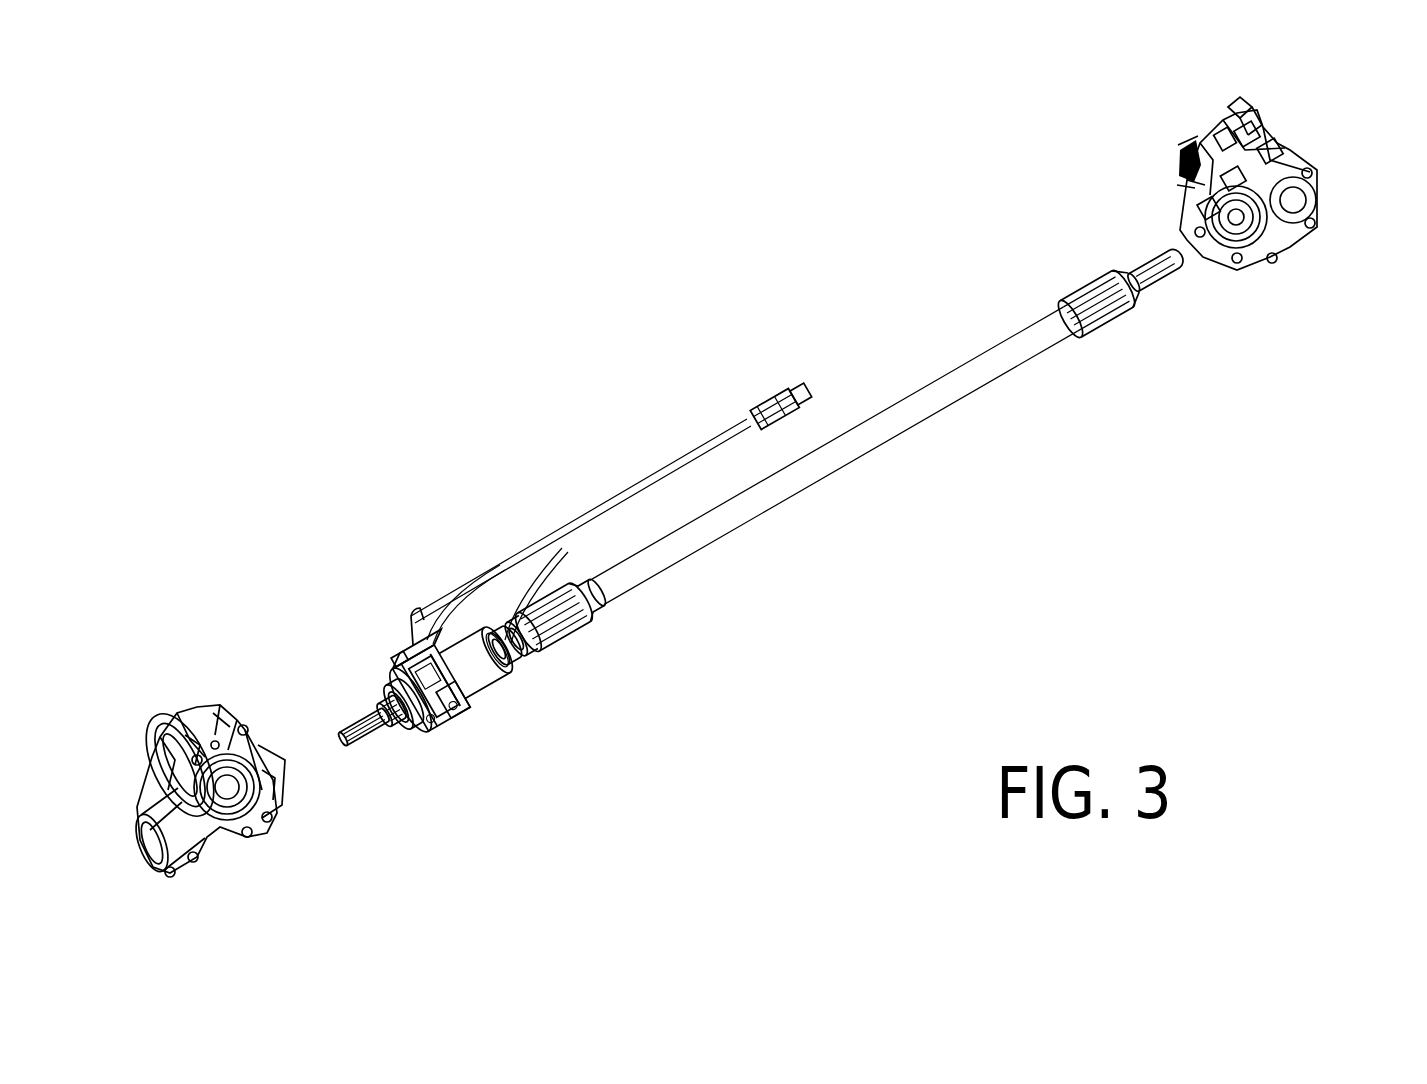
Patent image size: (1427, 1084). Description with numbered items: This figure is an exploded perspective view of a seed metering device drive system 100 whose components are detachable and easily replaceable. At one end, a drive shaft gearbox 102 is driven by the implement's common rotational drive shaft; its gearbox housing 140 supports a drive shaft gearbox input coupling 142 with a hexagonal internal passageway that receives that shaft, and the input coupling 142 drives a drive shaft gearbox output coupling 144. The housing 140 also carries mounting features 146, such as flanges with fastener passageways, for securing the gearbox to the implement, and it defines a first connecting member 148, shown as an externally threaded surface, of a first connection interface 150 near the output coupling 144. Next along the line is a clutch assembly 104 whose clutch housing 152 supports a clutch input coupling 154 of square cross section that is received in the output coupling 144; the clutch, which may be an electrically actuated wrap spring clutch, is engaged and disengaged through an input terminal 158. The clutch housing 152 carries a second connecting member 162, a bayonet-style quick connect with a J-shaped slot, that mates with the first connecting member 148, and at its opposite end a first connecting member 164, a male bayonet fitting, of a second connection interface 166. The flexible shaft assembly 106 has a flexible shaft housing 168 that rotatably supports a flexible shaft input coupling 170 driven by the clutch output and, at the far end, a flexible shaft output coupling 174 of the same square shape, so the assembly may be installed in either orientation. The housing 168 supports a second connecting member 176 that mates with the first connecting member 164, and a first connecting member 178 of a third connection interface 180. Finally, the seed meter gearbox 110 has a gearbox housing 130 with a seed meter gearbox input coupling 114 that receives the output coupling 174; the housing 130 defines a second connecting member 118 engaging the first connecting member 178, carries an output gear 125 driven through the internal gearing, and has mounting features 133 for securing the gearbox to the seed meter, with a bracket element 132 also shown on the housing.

The seed metering device drive system 100 is at (558, 215).
The drive shaft gearbox 102 is at (297, 897).
The clutch assembly 104 is at (381, 560).
The flexible shaft assembly 106 is at (882, 488).
The seed meter gearbox 110 is at (1328, 267).
The seed meter gearbox input coupling 114 is at (1207, 230).
The second connecting member 118 is at (1233, 233).
The output gear 125 is at (1180, 153).
The gearbox housing 130 is at (1300, 193).
The mounting bracket 132 is at (1257, 127).
The mounting features 133 is at (1263, 158).
The gearbox housing 140 is at (181, 845).
The drive shaft gearbox input coupling 142 is at (248, 820).
The drive shaft gearbox output coupling 144 is at (288, 777).
The mounting features 146 is at (148, 803).
The first connecting member 148 is at (275, 788).
The first connection interface 150 is at (378, 817).
The clutch housing 152 is at (463, 687).
The clutch input coupling 154 is at (350, 727).
The input terminal 158 is at (417, 650).
The second connecting member 162 is at (385, 700).
The first connecting member 164 is at (500, 660).
The second connection interface 166 is at (590, 708).
The flexible shaft housing 168 is at (897, 417).
The flexible shaft input coupling 170 is at (505, 618).
The flexible shaft output coupling 174 is at (1163, 268).
The second connecting member 176 is at (588, 586).
The first connecting member 178 is at (1100, 275).
The third connection interface 180 is at (1130, 222).